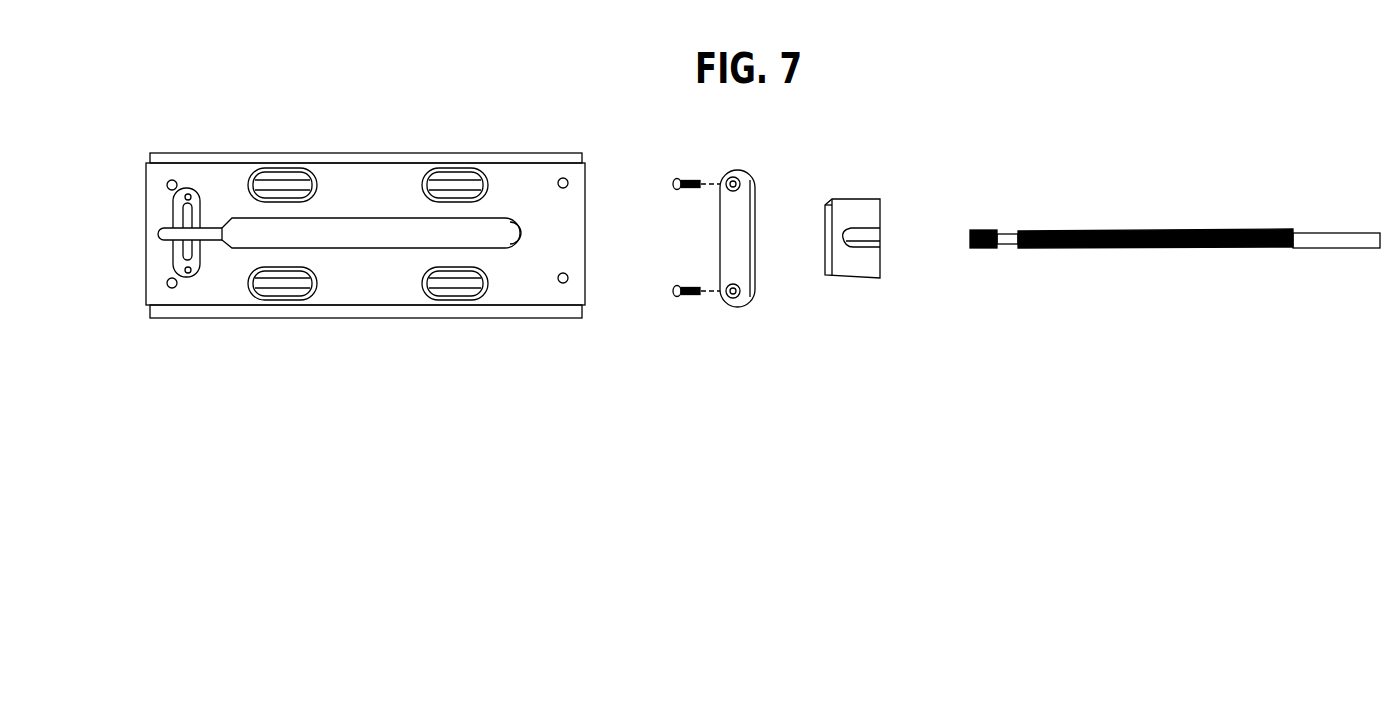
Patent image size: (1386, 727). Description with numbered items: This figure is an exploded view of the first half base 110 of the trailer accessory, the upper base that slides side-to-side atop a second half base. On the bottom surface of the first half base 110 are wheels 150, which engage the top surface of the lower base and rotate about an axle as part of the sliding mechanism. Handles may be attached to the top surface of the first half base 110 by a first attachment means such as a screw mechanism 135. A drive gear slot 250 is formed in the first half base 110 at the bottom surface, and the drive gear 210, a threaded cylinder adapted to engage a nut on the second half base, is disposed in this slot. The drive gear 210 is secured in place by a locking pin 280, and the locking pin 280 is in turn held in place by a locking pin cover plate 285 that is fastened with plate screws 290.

The first half base 110 is at (145, 285).
The screw mechanism 135 is at (563, 283).
The wheels 150 is at (438, 290).
The drive gear slot 250 is at (490, 228).
The locking pin cover plate 285 is at (735, 307).
The plate screws 290 is at (685, 175).
The locking pin 280 is at (850, 200).
The drive gear 210 is at (1322, 249).